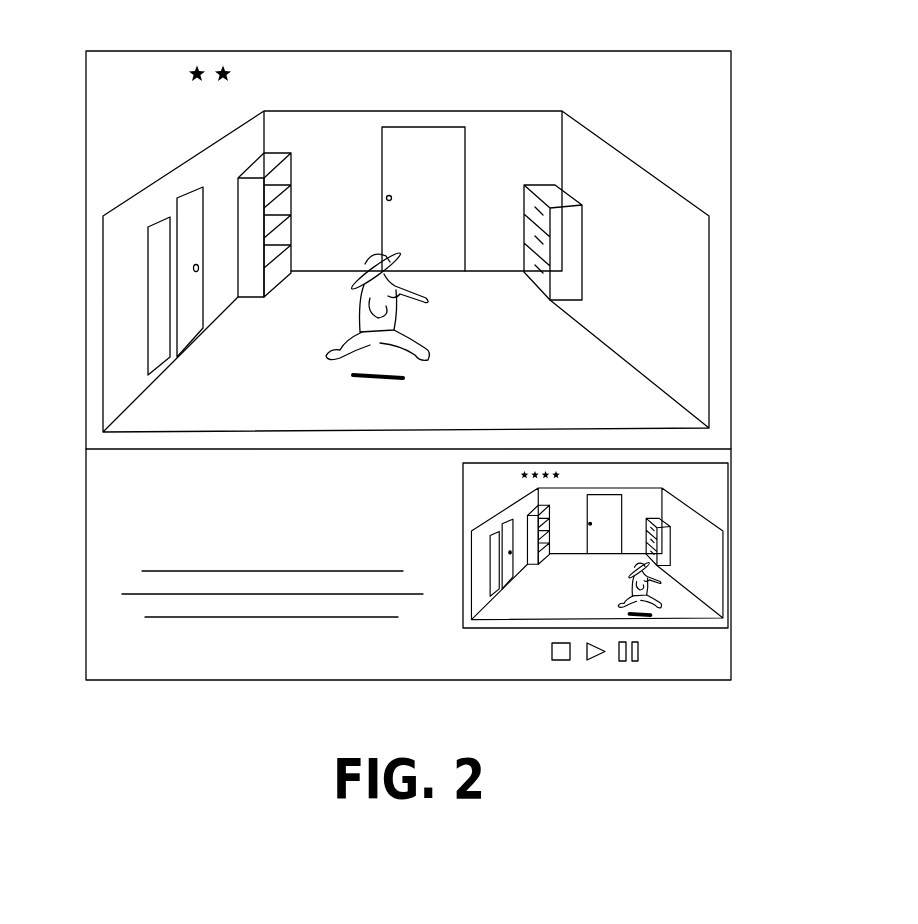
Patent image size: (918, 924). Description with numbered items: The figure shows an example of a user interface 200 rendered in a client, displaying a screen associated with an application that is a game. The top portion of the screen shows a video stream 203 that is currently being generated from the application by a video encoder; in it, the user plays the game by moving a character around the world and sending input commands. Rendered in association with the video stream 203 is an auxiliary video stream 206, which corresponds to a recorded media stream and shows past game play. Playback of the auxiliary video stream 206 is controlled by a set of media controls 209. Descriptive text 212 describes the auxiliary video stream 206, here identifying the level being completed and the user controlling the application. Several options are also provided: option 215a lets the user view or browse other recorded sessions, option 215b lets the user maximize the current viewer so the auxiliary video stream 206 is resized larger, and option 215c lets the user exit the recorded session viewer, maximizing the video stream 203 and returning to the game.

The user interface 200 is at (773, 93).
The video stream 203 is at (113, 153).
The descriptive text 212 is at (102, 510).
The option 215a is at (133, 560).
The option 215b is at (120, 584).
The option 215c is at (197, 622).
The auxiliary video stream 206 is at (713, 493).
The media controls 209 is at (680, 653).